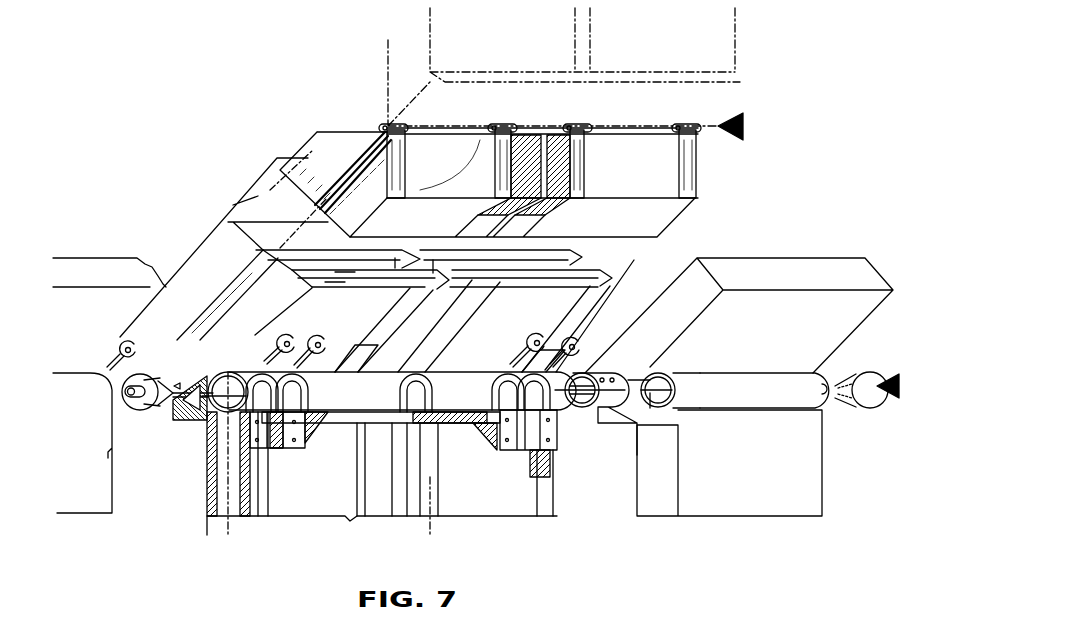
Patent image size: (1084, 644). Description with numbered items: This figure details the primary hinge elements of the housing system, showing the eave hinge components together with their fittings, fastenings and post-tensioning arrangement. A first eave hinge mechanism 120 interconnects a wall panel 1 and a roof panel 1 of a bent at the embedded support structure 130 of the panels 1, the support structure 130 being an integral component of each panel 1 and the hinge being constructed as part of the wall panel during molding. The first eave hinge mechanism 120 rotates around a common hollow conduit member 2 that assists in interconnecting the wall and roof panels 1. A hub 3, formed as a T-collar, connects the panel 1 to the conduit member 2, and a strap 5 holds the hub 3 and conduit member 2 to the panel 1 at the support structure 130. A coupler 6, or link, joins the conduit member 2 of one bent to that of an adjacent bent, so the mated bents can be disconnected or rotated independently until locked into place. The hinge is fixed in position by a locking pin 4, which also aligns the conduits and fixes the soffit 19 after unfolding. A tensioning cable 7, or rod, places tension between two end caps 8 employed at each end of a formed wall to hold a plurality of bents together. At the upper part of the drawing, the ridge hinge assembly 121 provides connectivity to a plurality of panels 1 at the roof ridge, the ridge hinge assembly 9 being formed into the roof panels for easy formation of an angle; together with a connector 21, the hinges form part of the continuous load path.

The panel 1 is at (212, 265).
The conduit member 2 is at (327, 395).
The hub 3 is at (230, 373).
The pin 4 is at (121, 343).
The strap 5 is at (348, 368).
The coupler 6 is at (585, 408).
The tensioning cable 7 is at (192, 392).
The end cap 8 is at (140, 410).
The ridge hinge assembly 9 is at (386, 126).
The soffit 19 is at (196, 412).
The connector 21 is at (556, 200).
The first eave hinge mechanism 120 is at (899, 386).
The ridge hinge assembly 121 is at (743, 126).
The support structure 130 is at (640, 175).